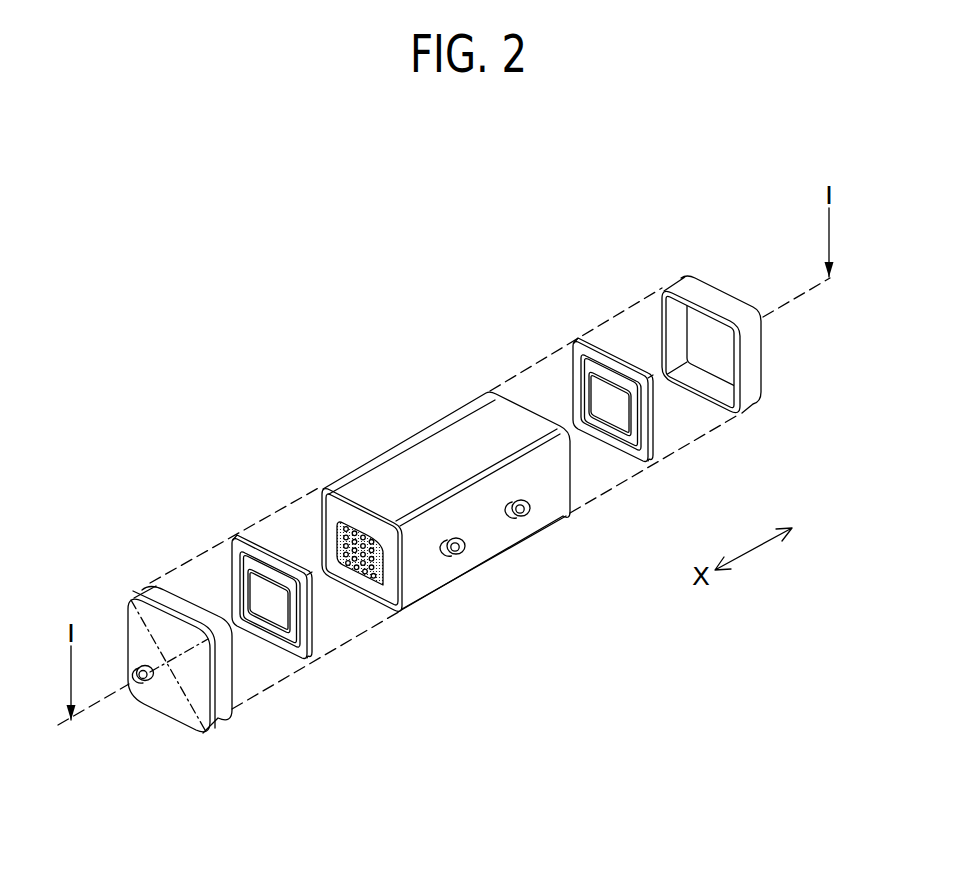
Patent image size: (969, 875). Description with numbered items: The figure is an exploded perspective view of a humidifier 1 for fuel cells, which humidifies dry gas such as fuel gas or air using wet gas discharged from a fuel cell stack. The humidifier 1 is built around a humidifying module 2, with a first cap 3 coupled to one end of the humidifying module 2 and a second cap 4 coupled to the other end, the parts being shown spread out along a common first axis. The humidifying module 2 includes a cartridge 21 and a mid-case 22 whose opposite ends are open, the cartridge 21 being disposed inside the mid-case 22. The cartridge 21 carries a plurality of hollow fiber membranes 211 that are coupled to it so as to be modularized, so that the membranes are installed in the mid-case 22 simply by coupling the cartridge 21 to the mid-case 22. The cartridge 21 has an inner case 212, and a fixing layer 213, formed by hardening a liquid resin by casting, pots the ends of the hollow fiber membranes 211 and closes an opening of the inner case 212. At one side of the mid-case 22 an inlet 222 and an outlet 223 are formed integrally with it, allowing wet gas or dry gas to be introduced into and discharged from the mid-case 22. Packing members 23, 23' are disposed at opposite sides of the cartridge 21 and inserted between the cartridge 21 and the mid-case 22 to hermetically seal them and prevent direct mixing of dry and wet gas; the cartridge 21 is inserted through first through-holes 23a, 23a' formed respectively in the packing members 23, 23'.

The humidifier for fuel cells 1 is at (69, 258).
The humidifying module 2 is at (385, 327).
The cartridge 21 is at (381, 553).
The mid-case 22 is at (446, 523).
The packing member 23 is at (265, 595).
The packing member 23' is at (594, 405).
The first through-hole 23a is at (279, 659).
The first through-hole 23a' is at (623, 461).
The hollow fiber membranes 211 is at (348, 566).
The inner case 212 is at (388, 570).
The fixing layer 213 is at (374, 580).
The inlet 222 is at (455, 557).
The outlet 223 is at (521, 519).
The first cap 3 is at (141, 592).
The second cap 4 is at (721, 300).